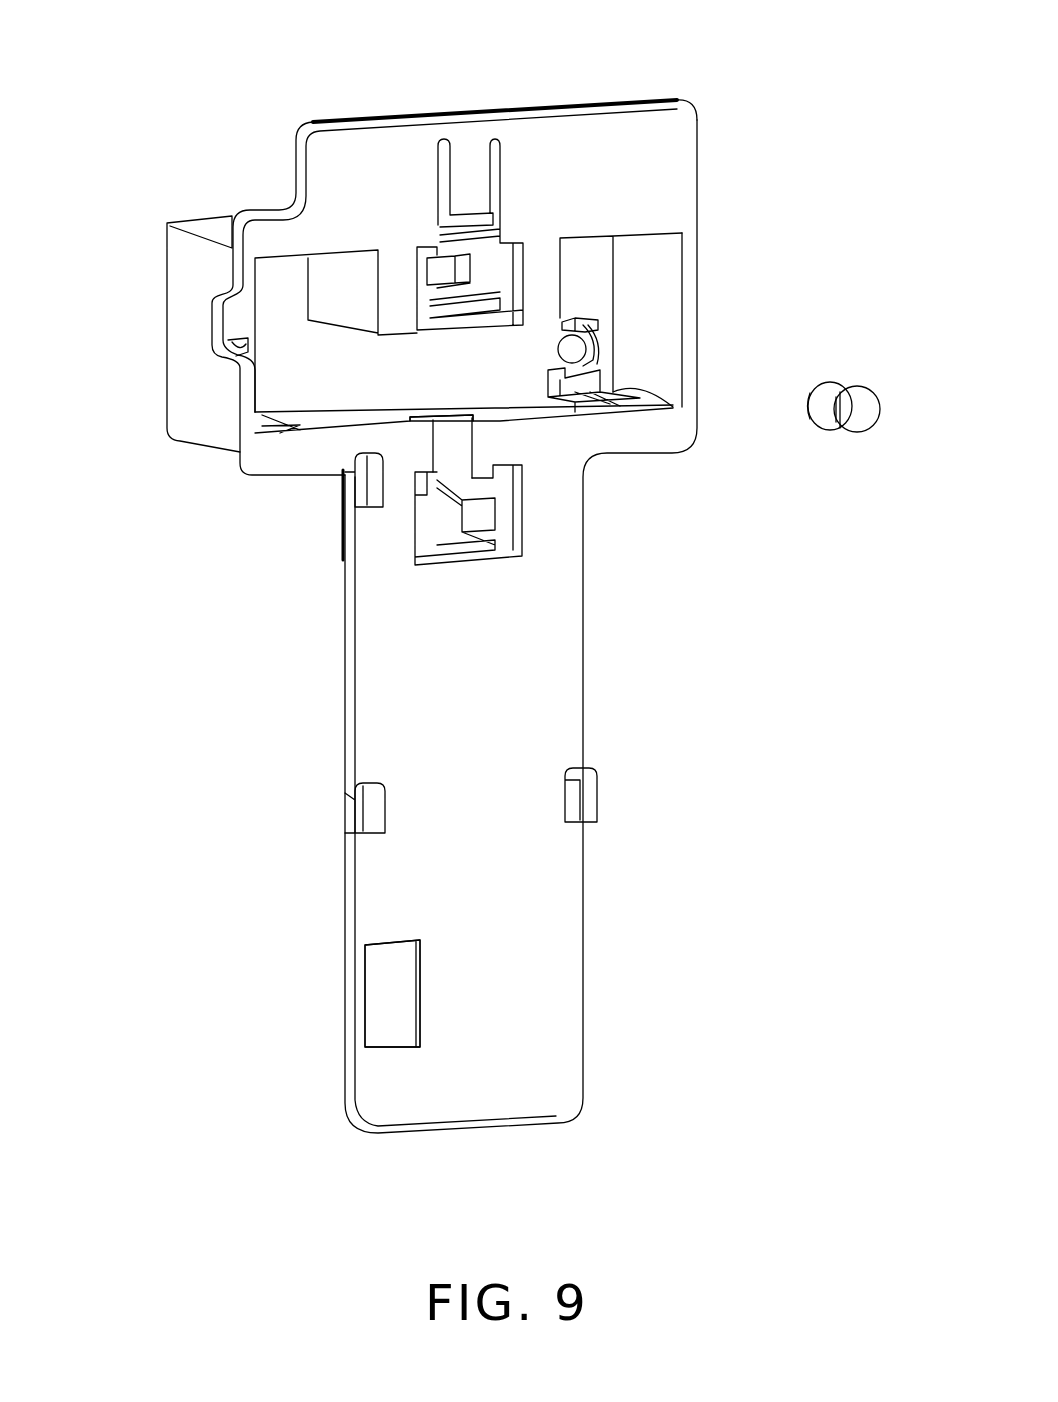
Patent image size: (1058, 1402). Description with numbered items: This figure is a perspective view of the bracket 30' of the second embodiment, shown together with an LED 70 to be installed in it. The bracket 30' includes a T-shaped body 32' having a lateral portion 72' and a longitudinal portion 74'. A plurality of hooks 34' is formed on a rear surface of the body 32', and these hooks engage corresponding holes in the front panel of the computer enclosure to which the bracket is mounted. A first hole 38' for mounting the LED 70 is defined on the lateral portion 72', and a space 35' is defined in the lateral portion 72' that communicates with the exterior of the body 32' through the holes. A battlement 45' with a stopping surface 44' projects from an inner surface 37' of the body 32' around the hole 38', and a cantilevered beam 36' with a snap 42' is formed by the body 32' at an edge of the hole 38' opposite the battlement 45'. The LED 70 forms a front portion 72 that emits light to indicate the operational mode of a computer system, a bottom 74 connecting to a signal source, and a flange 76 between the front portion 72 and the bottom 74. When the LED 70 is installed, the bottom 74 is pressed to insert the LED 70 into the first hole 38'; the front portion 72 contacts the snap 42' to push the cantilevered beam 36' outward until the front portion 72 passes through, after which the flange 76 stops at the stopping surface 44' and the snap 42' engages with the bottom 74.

The bracket 30' is at (454, 567).
The T-shaped body 32' is at (520, 849).
The hooks 34' is at (421, 643).
The space 35' is at (350, 455).
The cantilevered beam 36' is at (714, 372).
The inner surface 37' is at (674, 301).
The first hole 38' is at (673, 341).
The snap 42' is at (668, 382).
The stopping surface 44' is at (686, 324).
The battlement 45' is at (675, 289).
The LED 70 is at (852, 412).
The front portion 72 is at (847, 386).
The bottom 74 is at (884, 409).
The flange 76 is at (836, 432).
The lateral portion 72' is at (151, 334).
The longitudinal portion 74' is at (528, 972).